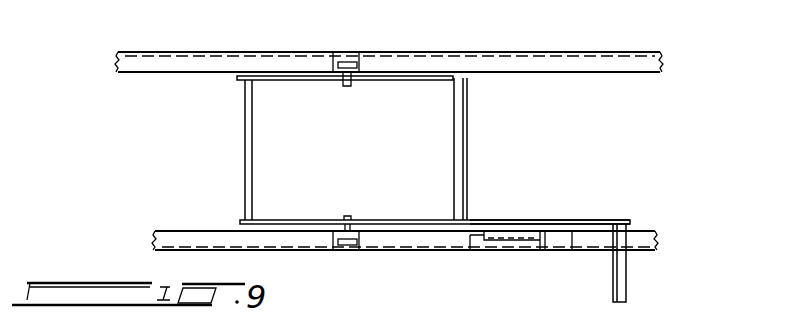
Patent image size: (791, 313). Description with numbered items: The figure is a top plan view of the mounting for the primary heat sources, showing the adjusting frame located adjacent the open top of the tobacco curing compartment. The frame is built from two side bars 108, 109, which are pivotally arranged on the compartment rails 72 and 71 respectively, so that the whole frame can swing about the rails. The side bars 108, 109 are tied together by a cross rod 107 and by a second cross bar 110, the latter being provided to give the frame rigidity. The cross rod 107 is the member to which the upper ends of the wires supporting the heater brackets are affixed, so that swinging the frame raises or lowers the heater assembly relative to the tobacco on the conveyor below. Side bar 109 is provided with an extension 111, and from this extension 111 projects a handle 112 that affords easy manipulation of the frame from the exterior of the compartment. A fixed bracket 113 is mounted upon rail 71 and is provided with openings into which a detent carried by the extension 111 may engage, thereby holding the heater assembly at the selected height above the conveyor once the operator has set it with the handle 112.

The rail 72 is at (462, 66).
The side bar 108 is at (430, 81).
The cross rod 107 is at (252, 127).
The second cross bar 110 is at (467, 183).
The side bar 109 is at (272, 219).
The extension 111 is at (572, 219).
The handle 112 is at (626, 270).
The rail 71 is at (385, 249).
The fixed bracket 113 is at (497, 251).